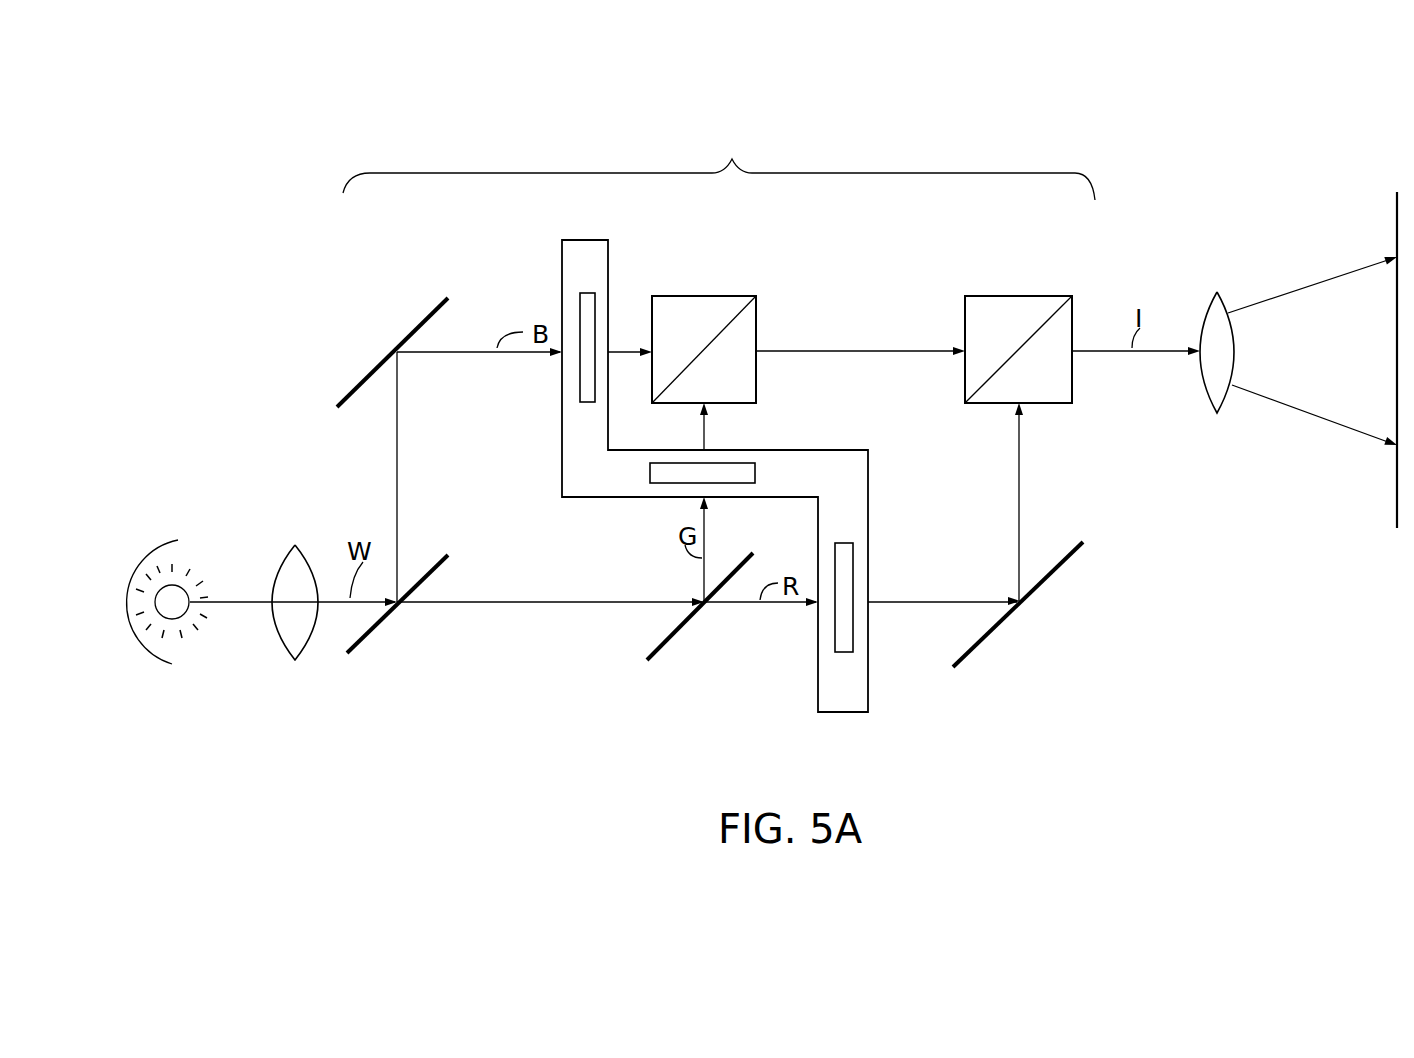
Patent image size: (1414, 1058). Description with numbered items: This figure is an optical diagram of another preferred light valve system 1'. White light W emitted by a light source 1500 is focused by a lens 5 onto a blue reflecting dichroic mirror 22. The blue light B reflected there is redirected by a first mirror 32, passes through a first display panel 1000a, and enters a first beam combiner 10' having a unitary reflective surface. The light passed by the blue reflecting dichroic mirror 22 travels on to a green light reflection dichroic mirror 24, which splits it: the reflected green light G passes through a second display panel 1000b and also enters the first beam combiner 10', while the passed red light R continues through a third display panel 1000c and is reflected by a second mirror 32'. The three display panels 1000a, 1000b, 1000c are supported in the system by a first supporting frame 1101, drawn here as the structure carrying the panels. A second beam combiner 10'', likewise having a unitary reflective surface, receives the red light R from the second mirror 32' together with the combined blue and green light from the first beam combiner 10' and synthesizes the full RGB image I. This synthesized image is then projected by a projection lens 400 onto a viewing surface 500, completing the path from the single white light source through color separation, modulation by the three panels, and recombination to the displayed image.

The light valve system 1' is at (719, 162).
The light source 1500 is at (199, 545).
The lens 5 is at (295, 640).
The blue reflecting dichroic mirror 22 is at (368, 635).
The first mirror 32 is at (392, 335).
The green light reflection dichroic mirror 24 is at (662, 648).
The second mirror 32' is at (1043, 604).
The first display panel 1000a is at (587, 292).
The second display panel 1000b is at (737, 470).
The third display panel 1000c is at (847, 557).
The first supporting frame 1101 is at (848, 677).
The first beam combiner 10' is at (731, 327).
The second beam combiner 10'' is at (1029, 320).
The projection lens 400 is at (1213, 388).
The viewing surface 500 is at (1393, 487).